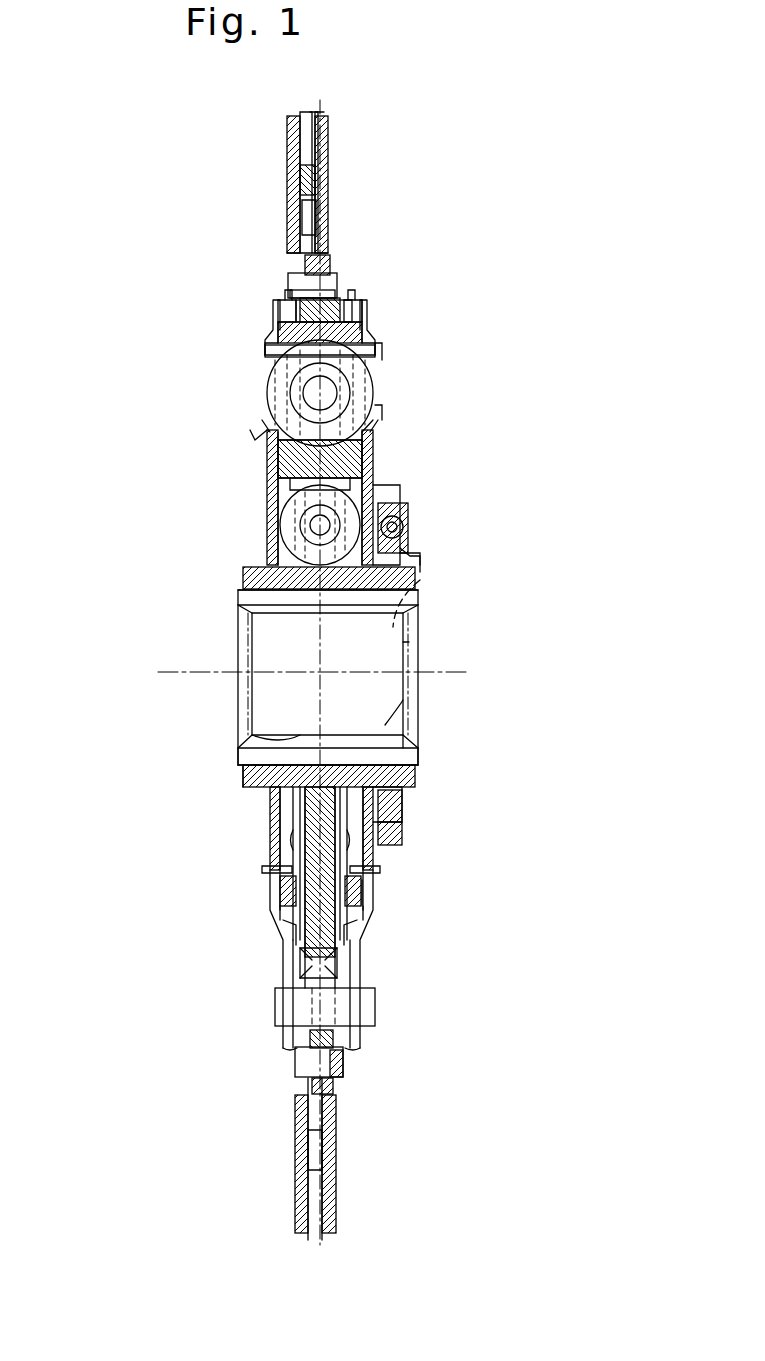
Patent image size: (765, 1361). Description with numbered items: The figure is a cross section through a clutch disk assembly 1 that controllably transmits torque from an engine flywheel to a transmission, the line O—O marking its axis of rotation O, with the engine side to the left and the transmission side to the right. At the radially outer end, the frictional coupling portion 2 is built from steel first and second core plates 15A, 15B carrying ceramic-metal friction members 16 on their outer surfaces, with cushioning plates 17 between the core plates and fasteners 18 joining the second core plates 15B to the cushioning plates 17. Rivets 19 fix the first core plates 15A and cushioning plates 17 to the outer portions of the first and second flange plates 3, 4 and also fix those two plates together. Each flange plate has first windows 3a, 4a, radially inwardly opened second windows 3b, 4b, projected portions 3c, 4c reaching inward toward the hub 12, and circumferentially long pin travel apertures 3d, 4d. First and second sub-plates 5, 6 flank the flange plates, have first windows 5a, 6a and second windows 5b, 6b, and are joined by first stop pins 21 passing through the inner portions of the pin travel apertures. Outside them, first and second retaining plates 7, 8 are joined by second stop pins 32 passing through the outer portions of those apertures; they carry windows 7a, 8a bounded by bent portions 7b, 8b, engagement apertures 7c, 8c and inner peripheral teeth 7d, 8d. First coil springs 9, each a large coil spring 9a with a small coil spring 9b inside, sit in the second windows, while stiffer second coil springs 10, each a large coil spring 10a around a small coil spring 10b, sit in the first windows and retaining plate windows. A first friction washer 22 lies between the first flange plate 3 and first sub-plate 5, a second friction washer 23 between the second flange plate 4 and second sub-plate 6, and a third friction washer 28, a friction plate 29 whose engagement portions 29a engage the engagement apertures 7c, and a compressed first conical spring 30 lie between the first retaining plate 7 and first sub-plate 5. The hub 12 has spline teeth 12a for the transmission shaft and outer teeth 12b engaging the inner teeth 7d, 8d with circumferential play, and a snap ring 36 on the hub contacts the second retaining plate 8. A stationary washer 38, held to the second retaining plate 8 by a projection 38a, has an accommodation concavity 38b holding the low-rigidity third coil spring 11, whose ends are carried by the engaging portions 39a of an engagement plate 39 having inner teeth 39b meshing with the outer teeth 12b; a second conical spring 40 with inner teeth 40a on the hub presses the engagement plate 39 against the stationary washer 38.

The clutch disk assembly 1 is at (530, 187).
The frictional coupling portion 2 is at (268, 150).
The first flange plate 3 is at (333, 250).
The first windows 3a is at (278, 300).
The second windows 3b is at (280, 503).
The projected portions 3c is at (290, 745).
The pin travel apertures 3d is at (287, 963).
The second flange plate 4 is at (336, 258).
The first windows 4a is at (350, 290).
The second windows 4b is at (365, 458).
The projected portions 4c is at (328, 765).
The pin travel apertures 4d is at (360, 963).
The first sub-plate 5 is at (292, 820).
The first windows 5a is at (262, 347).
The second windows 5b is at (292, 522).
The second sub-plate 6 is at (355, 843).
The first windows 6a is at (368, 312).
The second windows 6b is at (360, 500).
The first retaining plate 7 is at (262, 482).
The windows 7a is at (250, 417).
The bent portions 7b is at (270, 318).
The engagement apertures 7c is at (270, 855).
The inner peripheral teeth 7d is at (240, 770).
The second retaining plate 8 is at (380, 478).
The windows 8a is at (378, 372).
The bent portions 8b is at (380, 340).
The engagement apertures 8c is at (380, 877).
The inner peripheral teeth 8d is at (423, 733).
The first coil springs 9 is at (33, 573).
The large coil spring 9a is at (258, 558).
The small coil spring 9b is at (275, 562).
The second coil springs 10 is at (80, 328).
The large coil spring 10a is at (262, 375).
The small coil spring 10b is at (262, 398).
The third coil spring 11 is at (407, 527).
The hub 12 is at (423, 598).
The spline teeth 12a is at (358, 615).
The outer teeth 12b is at (420, 765).
The first core plate 15A is at (309, 113).
The second core plate 15B is at (319, 112).
The friction members 16 is at (290, 124).
The cushioning plates 17 is at (328, 210).
The fasteners 18 is at (298, 175).
The rivets 19 is at (290, 280).
The first stop pins 21 is at (290, 998).
The first friction washer 22 is at (262, 497).
The second friction washer 23 is at (370, 430).
The third friction washer 28 is at (277, 923).
The friction plate 29 is at (275, 905).
The engagement portions 29a is at (262, 868).
The first conical spring 30 is at (278, 893).
The second stop pins 32 is at (375, 1013).
The snap ring 36 is at (385, 725).
The stationary washer 38 is at (402, 822).
The projection 38a is at (380, 850).
The accommodation concavity 38b is at (413, 537).
The engagement plate 39 is at (413, 577).
The engaging portions 39a is at (397, 517).
The inner teeth 39b is at (423, 642).
The second conical spring 40 is at (420, 777).
The inner teeth 40a is at (427, 577).
The axis of rotation O is at (314, 671).